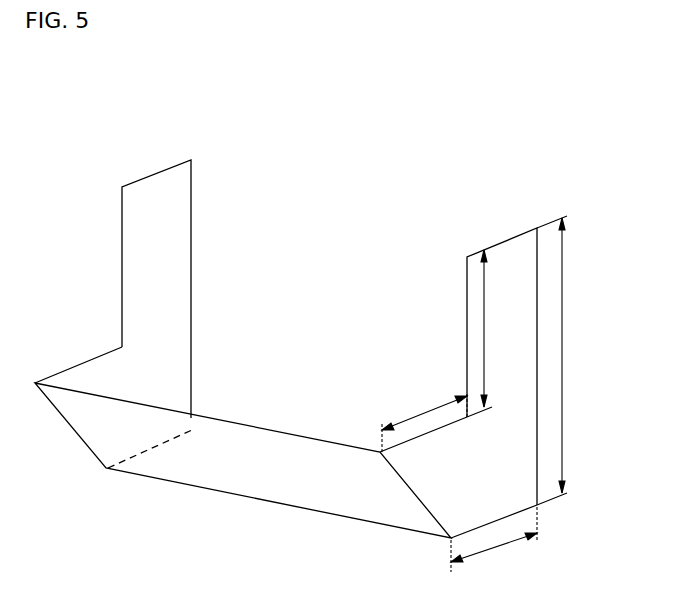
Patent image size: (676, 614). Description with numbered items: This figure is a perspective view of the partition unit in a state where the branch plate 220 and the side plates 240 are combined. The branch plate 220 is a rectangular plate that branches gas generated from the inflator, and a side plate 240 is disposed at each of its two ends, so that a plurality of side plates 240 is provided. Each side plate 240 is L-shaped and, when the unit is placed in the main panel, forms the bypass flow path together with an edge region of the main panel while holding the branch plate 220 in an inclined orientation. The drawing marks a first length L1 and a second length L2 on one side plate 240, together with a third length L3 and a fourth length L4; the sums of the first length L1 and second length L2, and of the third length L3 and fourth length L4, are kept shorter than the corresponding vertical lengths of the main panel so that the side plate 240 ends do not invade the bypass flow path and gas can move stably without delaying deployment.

The branch plate 220 is at (267, 473).
The side plate 240 is at (161, 138).
The first length L1 is at (424, 420).
The second length L2 is at (492, 333).
The third length L3 is at (494, 545).
The fourth length L4 is at (568, 360).